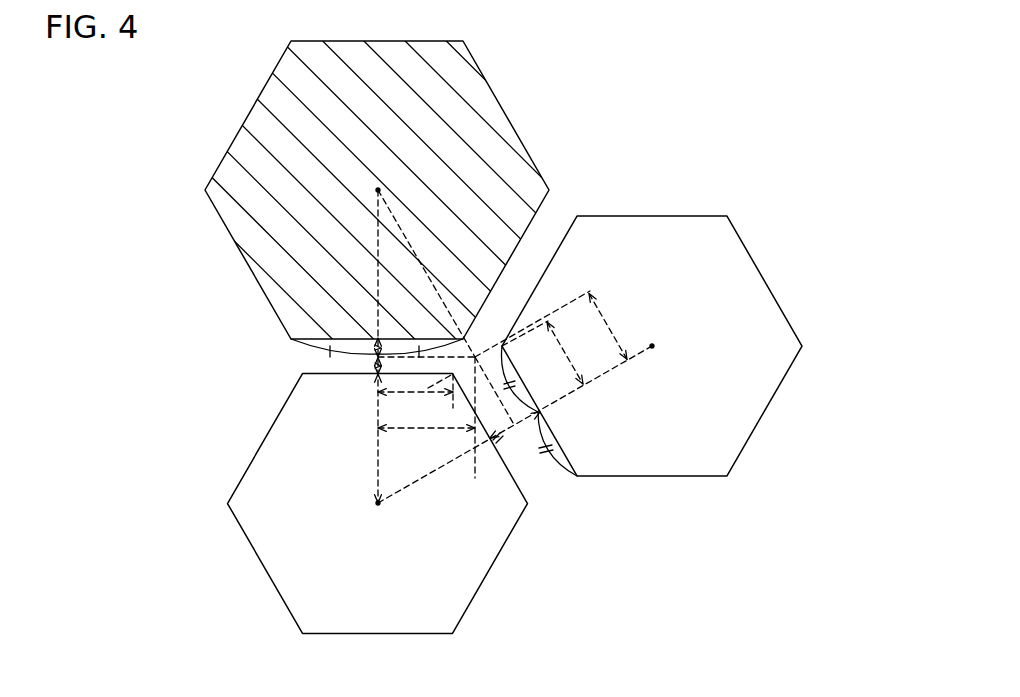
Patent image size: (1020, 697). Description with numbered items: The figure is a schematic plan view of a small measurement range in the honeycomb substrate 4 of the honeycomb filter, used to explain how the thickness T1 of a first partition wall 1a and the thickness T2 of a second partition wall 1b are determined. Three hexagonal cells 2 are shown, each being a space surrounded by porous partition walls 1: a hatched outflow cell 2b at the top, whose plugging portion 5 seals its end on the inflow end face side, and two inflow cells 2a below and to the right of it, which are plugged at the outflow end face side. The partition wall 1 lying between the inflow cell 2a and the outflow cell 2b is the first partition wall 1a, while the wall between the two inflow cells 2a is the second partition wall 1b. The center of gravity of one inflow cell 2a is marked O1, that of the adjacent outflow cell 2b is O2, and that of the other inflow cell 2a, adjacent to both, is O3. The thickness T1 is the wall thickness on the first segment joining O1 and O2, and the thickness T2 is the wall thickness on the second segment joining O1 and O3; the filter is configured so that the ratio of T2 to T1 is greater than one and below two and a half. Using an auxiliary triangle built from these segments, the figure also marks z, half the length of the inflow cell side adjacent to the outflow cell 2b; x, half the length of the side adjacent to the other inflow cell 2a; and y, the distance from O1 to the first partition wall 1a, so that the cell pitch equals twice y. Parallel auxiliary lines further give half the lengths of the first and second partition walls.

The partition wall 1 is at (406, 433).
The first partition wall 1a is at (340, 367).
The second partition wall 1b is at (545, 461).
The cell 2 is at (514, 337).
The inflow cell 2a is at (378, 550).
The outflow cell 2b is at (420, 140).
The honeycomb substrate 4 is at (712, 215).
The plugging portion 5 is at (263, 198).
The center of gravity of the one inflow cell O1 is at (378, 503).
The center of gravity of the outflow cell O2 is at (378, 190).
The center of gravity of another inflow cell O3 is at (652, 346).
The thickness of the first partition wall T1 is at (378, 374).
The thickness of the second partition wall T2 is at (514, 425).
The half length of the side adjacent to another inflow cell x is at (565, 353).
The distance from center of gravity O1 to the first partition wall y is at (369, 438).
The half length of the side adjacent to the outflow cell z is at (415, 403).